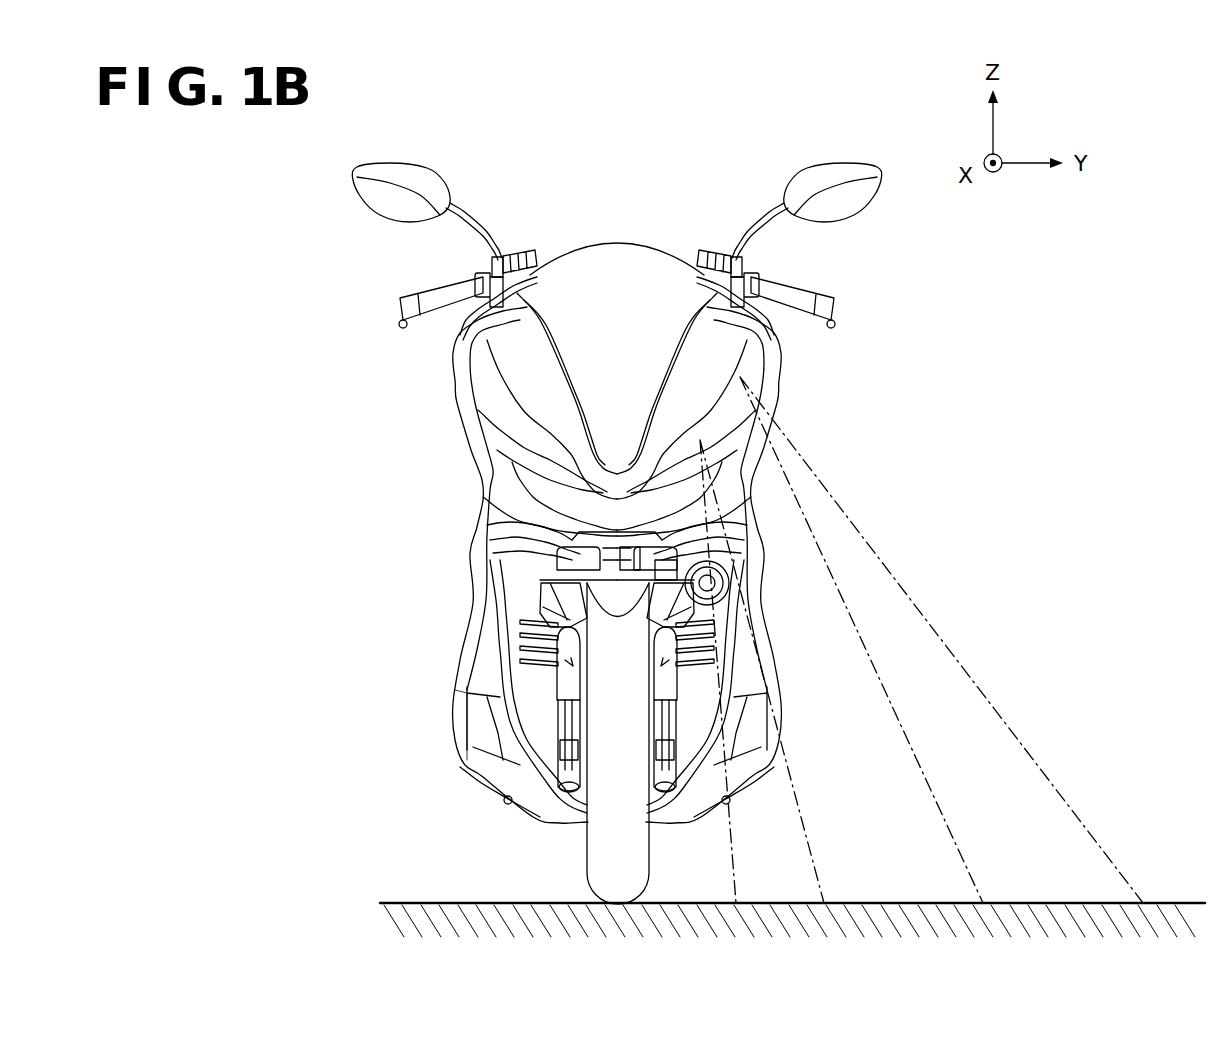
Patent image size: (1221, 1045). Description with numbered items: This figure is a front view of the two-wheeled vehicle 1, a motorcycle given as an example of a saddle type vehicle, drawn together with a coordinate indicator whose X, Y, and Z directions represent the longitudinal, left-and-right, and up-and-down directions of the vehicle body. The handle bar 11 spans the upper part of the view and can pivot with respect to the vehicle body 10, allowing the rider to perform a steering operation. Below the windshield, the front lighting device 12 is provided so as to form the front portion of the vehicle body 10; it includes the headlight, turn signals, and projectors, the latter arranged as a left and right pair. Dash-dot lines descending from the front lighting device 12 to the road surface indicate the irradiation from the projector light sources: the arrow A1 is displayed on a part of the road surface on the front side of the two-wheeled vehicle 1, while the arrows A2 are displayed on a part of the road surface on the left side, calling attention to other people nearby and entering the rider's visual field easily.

The two-wheeled vehicle 1 is at (460, 112).
The vehicle body 10 is at (482, 735).
The handle bar 11 is at (885, 260).
The front lighting device 12 is at (822, 401).
The arrow A1 is at (808, 838).
The arrows A2 is at (968, 670).